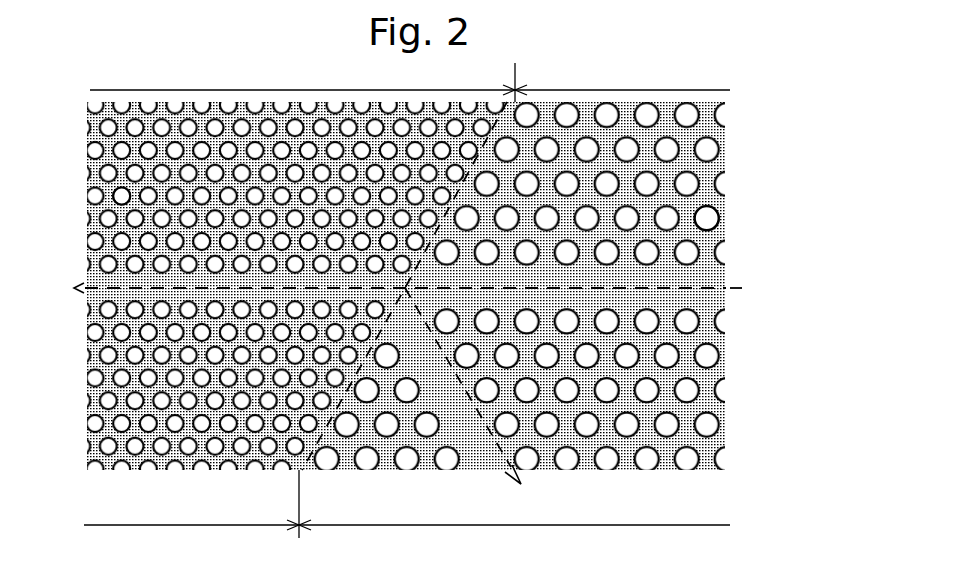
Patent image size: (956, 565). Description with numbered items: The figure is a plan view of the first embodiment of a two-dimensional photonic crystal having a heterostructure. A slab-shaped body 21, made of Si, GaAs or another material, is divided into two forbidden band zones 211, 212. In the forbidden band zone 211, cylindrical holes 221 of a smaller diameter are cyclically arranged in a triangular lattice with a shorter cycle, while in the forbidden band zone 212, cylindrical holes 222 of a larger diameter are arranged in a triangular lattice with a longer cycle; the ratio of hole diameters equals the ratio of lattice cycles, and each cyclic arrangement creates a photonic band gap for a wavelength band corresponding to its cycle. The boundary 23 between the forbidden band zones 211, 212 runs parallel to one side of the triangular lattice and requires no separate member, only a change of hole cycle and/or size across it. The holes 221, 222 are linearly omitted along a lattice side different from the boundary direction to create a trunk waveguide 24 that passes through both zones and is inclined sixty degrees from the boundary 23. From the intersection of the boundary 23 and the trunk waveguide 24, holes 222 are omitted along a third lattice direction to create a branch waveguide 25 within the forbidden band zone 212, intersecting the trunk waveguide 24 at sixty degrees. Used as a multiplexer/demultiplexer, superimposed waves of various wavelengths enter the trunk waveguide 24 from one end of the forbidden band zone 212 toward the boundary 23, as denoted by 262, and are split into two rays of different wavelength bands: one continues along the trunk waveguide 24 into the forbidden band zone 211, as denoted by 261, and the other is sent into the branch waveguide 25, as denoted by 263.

The body 21 is at (708, 172).
The forbidden band zone 211 is at (299, 310).
The forbidden band zone 212 is at (508, 307).
The cylindrical hole 221 is at (118, 196).
The cylindrical hole 222 is at (708, 216).
The boundary 23 is at (325, 425).
The trunk waveguide 24 is at (680, 277).
The branch waveguide 25 is at (427, 373).
The ray toward the other end of the trunk waveguide 261 is at (50, 288).
The superimposed waves introduced into the trunk waveguide 262 is at (769, 288).
The ray into the branch waveguide 263 is at (476, 400).